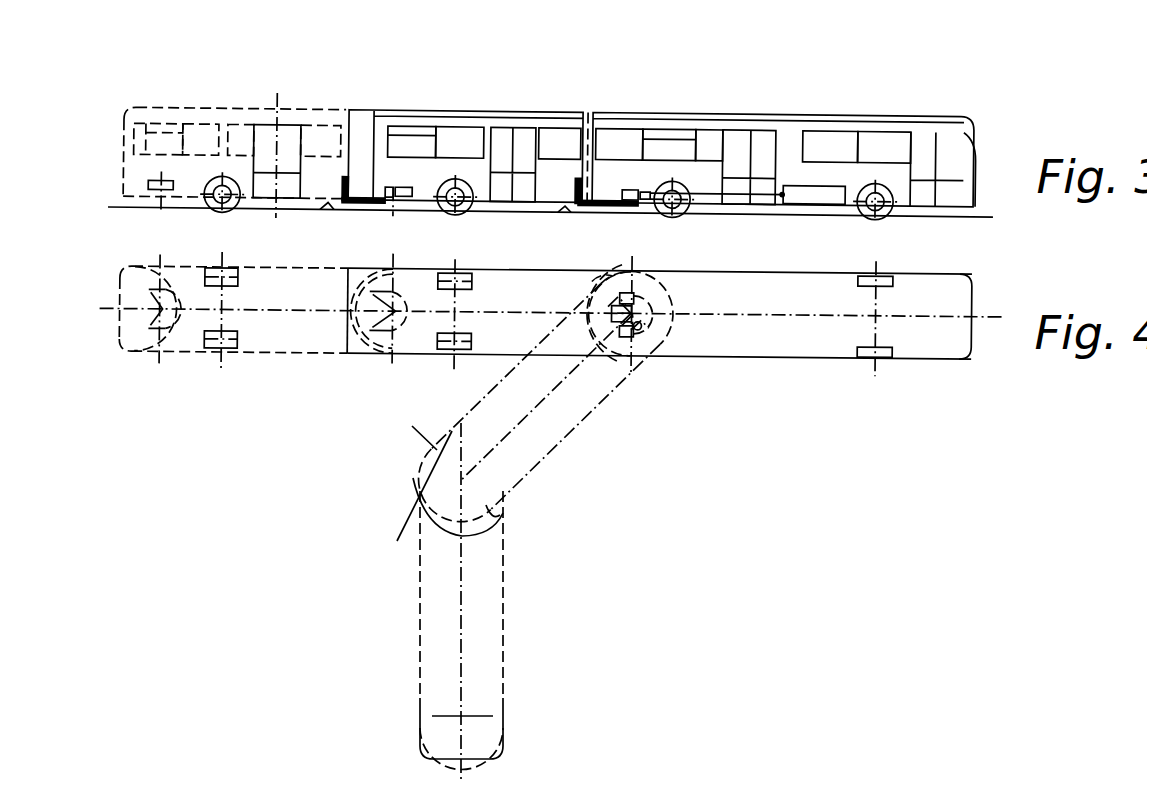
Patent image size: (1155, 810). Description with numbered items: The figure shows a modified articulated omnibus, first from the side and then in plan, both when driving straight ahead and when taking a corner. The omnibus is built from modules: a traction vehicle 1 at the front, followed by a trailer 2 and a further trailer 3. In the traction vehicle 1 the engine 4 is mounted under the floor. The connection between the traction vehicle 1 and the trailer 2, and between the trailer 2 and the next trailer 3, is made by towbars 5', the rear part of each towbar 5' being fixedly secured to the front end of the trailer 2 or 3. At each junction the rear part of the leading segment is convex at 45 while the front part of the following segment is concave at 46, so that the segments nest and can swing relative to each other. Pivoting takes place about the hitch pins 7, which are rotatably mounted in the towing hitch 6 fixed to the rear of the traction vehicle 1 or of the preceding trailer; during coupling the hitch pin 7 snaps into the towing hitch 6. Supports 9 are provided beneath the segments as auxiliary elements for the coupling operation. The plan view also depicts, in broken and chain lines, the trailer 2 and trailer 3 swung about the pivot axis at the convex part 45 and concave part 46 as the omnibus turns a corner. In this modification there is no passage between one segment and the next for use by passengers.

In FIG. 3, the traction vehicle 1 is at (818, 148).
In FIG. 4, the traction vehicle 1 is at (788, 337).
In FIG. 3, the trailer 2 is at (443, 120).
In FIG. 4, the trailer 2 is at (415, 337).
In FIG. 3, the trailer 3 is at (241, 115).
In FIG. 4, the trailer 3 is at (287, 340).
In FIG. 3, the engine 4 is at (822, 193).
In FIG. 3, the towbar 5' is at (489, 218).
In FIG. 4, the towbar 5' is at (400, 356).
In FIG. 3, the towing hitch 6 is at (643, 190).
In FIG. 4, the towing hitch 6 is at (640, 327).
In FIG. 3, the hitch pin 7 is at (633, 188).
In FIG. 4, the hitch pin 7 is at (634, 306).
In FIG. 3, the support 9 is at (325, 201).
In FIG. 4, the convex rear part 45 is at (612, 305).
In FIG. 4, the concave front part 46 is at (592, 276).